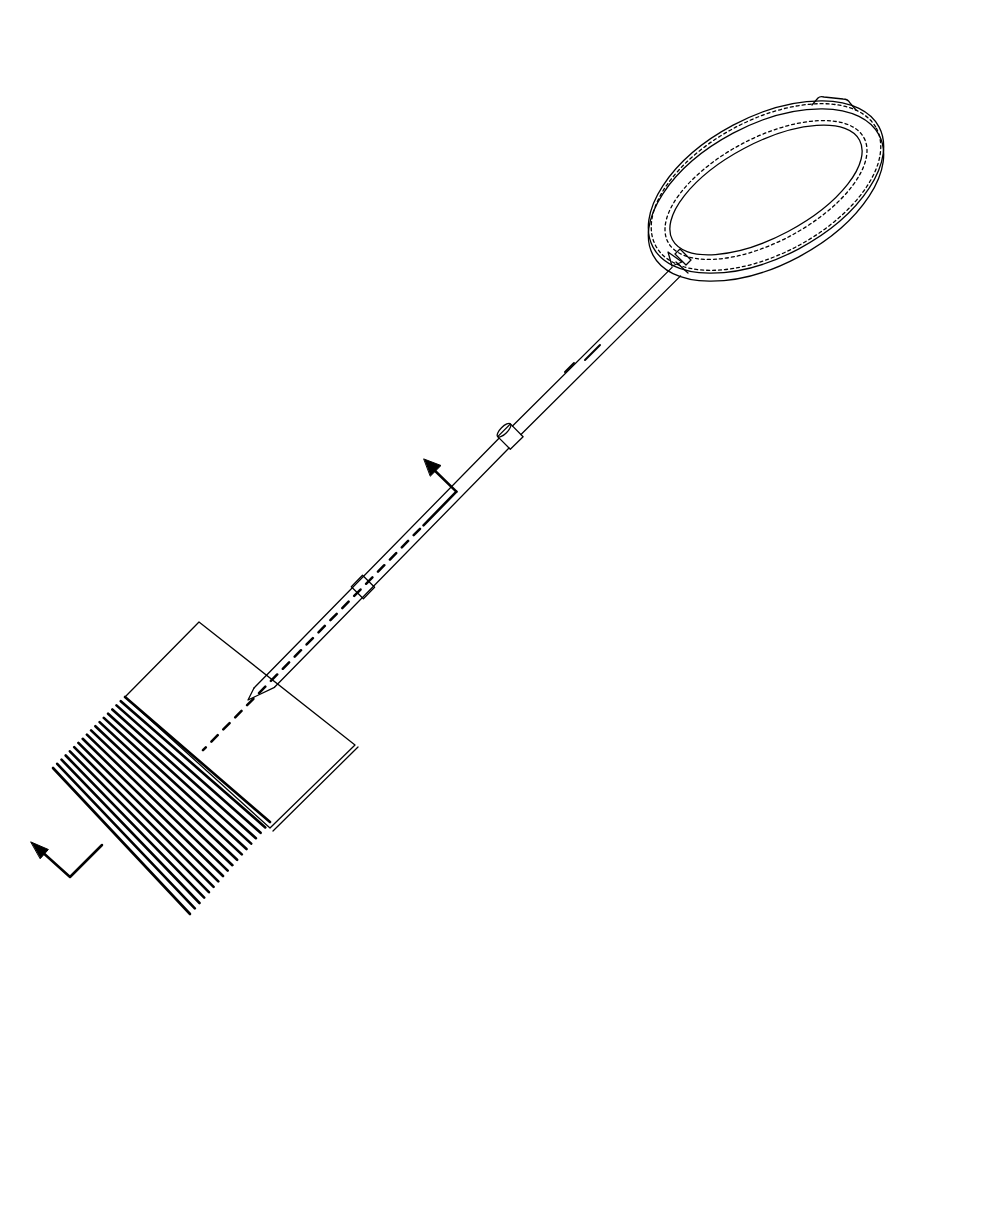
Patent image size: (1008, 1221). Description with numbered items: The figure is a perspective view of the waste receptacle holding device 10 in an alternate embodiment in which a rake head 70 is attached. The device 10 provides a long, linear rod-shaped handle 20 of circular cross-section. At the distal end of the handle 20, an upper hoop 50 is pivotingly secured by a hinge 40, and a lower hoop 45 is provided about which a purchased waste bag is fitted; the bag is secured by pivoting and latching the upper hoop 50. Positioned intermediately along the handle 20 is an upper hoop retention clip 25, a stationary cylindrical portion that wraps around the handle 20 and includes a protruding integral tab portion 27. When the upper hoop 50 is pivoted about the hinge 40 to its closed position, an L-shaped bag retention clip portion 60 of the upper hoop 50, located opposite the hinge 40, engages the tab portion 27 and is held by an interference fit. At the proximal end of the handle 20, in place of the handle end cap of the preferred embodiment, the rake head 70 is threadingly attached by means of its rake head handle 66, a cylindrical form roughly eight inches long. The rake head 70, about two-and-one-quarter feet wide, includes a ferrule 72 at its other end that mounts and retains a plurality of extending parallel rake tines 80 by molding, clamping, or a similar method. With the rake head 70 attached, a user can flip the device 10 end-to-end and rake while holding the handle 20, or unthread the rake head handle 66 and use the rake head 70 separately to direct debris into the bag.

The waste receptacle holding device 10 is at (200, 163).
The handle 20 is at (442, 508).
The upper hoop retention clip 25 is at (516, 426).
The tab portion 27 is at (503, 428).
The hinge 40 is at (675, 262).
The lower hoop 45 is at (743, 143).
The upper hoop 50 is at (688, 162).
The bag retention clip portion 60 is at (832, 103).
The rake head handle 66 is at (320, 655).
The rake head 70 is at (222, 634).
The ferrule 72 is at (285, 738).
The rake tines 80 is at (227, 813).